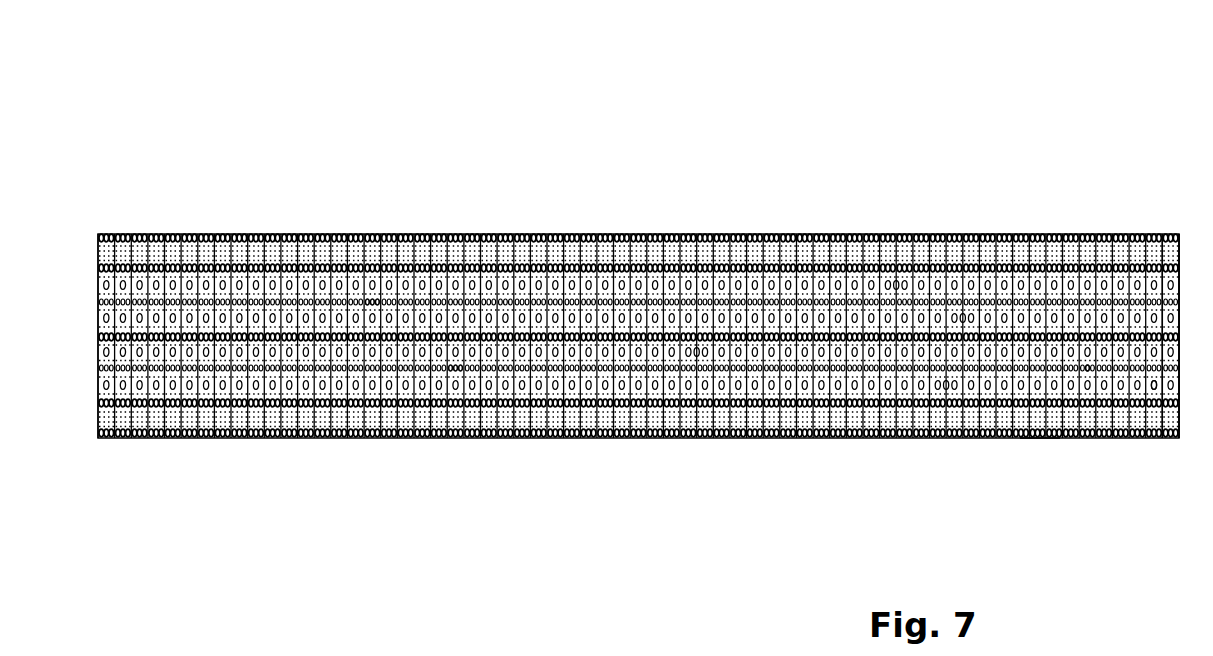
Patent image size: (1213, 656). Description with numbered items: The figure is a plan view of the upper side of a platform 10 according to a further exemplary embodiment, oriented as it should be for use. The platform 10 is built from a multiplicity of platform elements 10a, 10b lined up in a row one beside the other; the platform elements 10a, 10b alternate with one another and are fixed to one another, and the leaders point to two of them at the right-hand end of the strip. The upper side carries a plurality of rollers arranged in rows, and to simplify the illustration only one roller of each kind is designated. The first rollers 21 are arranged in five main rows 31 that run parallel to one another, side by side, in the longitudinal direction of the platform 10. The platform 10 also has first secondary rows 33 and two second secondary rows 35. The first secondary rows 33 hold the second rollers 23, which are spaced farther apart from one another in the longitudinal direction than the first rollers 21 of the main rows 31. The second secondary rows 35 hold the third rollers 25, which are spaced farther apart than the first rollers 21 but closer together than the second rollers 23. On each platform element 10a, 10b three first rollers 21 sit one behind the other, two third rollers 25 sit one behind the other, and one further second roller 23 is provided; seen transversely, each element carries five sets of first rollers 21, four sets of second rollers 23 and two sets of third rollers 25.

The platform 10 is at (110, 108).
The platform element 10a is at (1172, 218).
The platform element 10b is at (1150, 215).
The first roller 21 is at (1038, 437).
The second roller 23 is at (1150, 385).
The third roller 25 is at (1092, 368).
The main row 31 is at (521, 256).
The first secondary row 33 is at (910, 283).
The second secondary row 35 is at (370, 303).